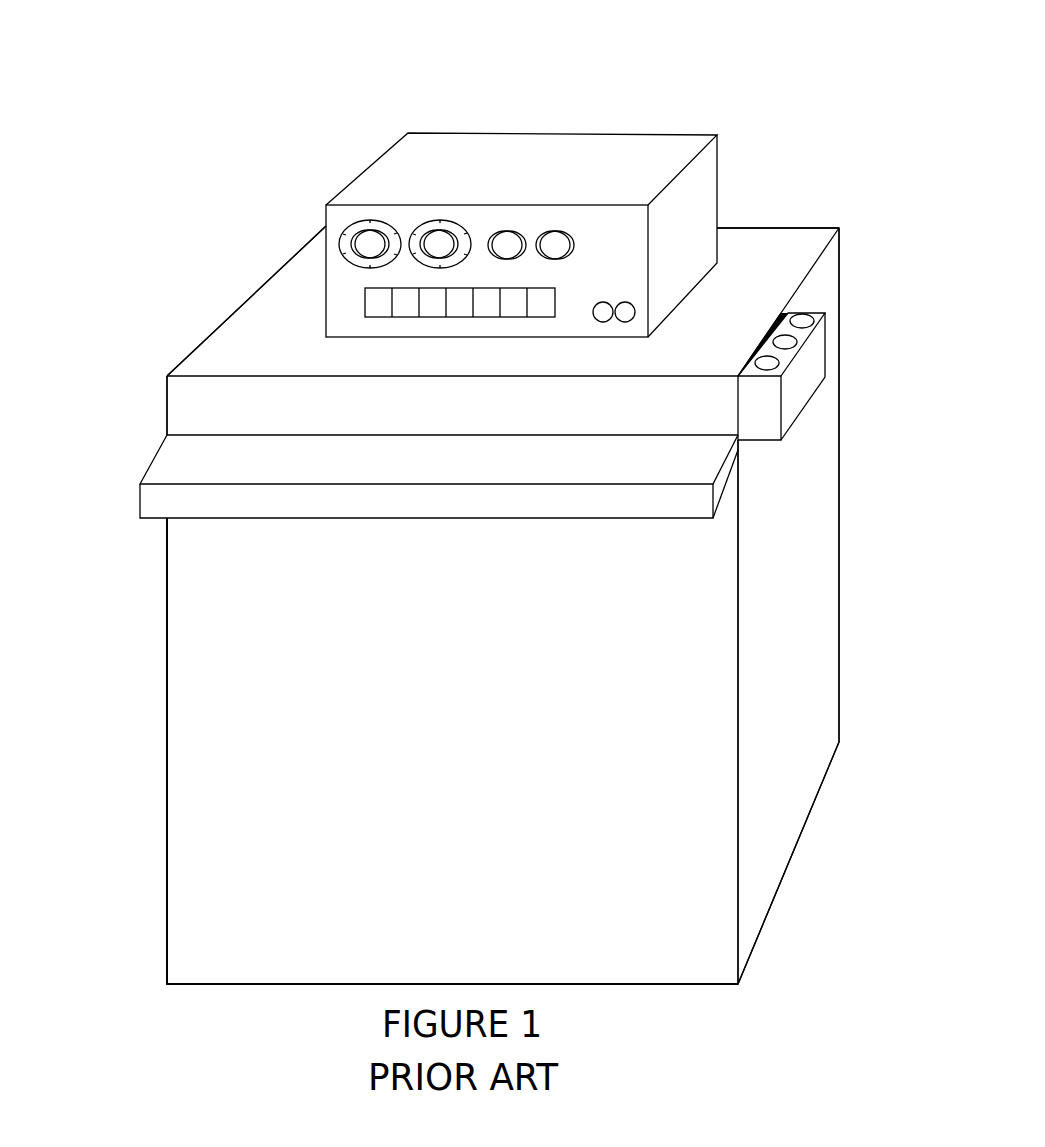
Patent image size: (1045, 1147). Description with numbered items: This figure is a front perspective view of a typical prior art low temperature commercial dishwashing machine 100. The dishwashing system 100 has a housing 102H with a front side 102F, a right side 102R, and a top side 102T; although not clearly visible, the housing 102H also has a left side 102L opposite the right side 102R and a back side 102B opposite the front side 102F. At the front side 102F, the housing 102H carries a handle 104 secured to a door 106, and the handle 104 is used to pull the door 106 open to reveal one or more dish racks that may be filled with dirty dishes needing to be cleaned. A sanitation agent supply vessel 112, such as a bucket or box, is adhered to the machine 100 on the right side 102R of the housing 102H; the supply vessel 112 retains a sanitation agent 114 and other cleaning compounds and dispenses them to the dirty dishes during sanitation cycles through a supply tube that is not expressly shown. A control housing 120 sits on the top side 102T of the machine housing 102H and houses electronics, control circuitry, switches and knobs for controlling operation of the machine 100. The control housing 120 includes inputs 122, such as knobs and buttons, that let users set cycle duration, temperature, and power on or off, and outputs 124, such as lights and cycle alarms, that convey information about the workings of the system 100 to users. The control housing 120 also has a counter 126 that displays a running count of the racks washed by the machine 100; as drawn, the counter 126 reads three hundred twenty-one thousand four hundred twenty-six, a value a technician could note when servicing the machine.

The low temperature commercial dishwashing machine 100 is at (306, 96).
The top side 102T is at (307, 275).
The back side 102B is at (816, 207).
The front side 102F is at (210, 716).
The right side 102R is at (773, 798).
The left side 102L is at (153, 891).
The housing 102H is at (261, 951).
The handle 104 is at (152, 508).
The door 106 is at (208, 625).
The sanitation agent supply vessel 112 is at (843, 376).
The sanitation agent 114 is at (786, 385).
The control housing 120 is at (657, 161).
The inputs 122 is at (525, 240).
The outputs 124 is at (635, 308).
The counter 126 is at (363, 299).